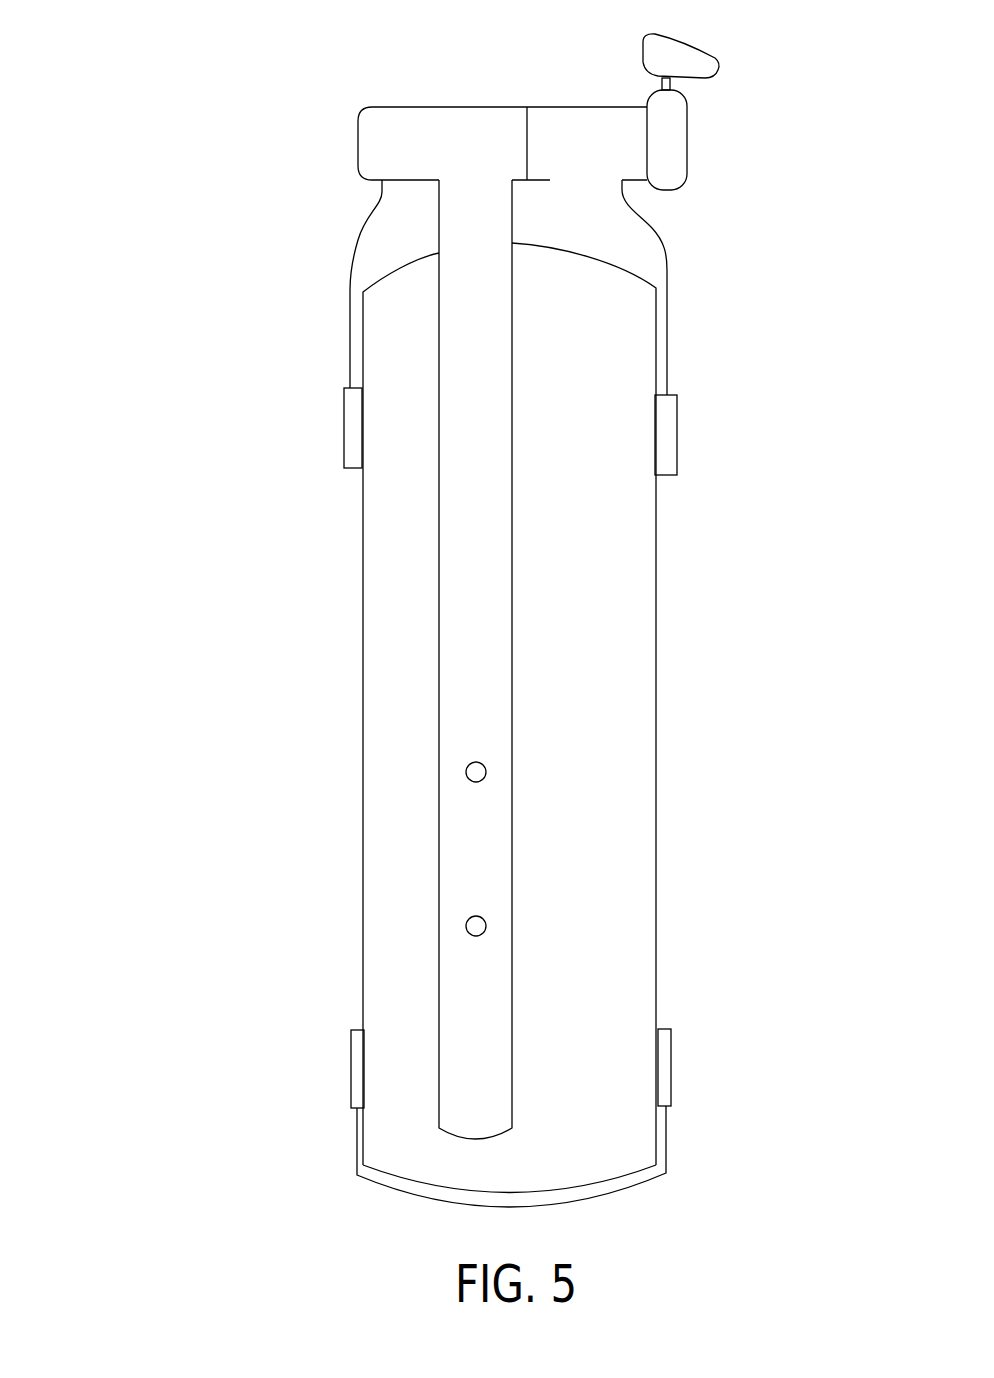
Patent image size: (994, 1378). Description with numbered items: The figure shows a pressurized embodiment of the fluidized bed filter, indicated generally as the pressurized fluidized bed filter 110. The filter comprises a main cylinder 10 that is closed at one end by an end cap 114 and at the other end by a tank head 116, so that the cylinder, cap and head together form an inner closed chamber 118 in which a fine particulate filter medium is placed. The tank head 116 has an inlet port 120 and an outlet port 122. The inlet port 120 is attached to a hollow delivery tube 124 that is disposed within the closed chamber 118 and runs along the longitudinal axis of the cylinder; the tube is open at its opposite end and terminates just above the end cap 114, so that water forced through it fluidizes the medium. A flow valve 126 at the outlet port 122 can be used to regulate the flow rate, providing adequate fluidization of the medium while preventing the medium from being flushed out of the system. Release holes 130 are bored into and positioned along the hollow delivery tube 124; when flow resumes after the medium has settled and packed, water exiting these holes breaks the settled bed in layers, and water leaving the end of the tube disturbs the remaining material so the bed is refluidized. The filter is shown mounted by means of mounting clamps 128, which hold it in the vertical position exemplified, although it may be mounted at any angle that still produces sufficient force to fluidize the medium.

The pressurized fluidized bed filter 110 is at (124, 118).
The main cylinder 10 is at (426, 704).
The end cap 114 is at (357, 1140).
The tank head 116 is at (350, 265).
The inner closed chamber 118 is at (509, 704).
The inlet port 120 is at (358, 148).
The outlet port 122 is at (687, 142).
The hollow delivery tube 124 is at (511, 658).
The flow valve 126 is at (687, 48).
The mounting clamps 128 is at (677, 436).
The release holes 130 is at (486, 772).